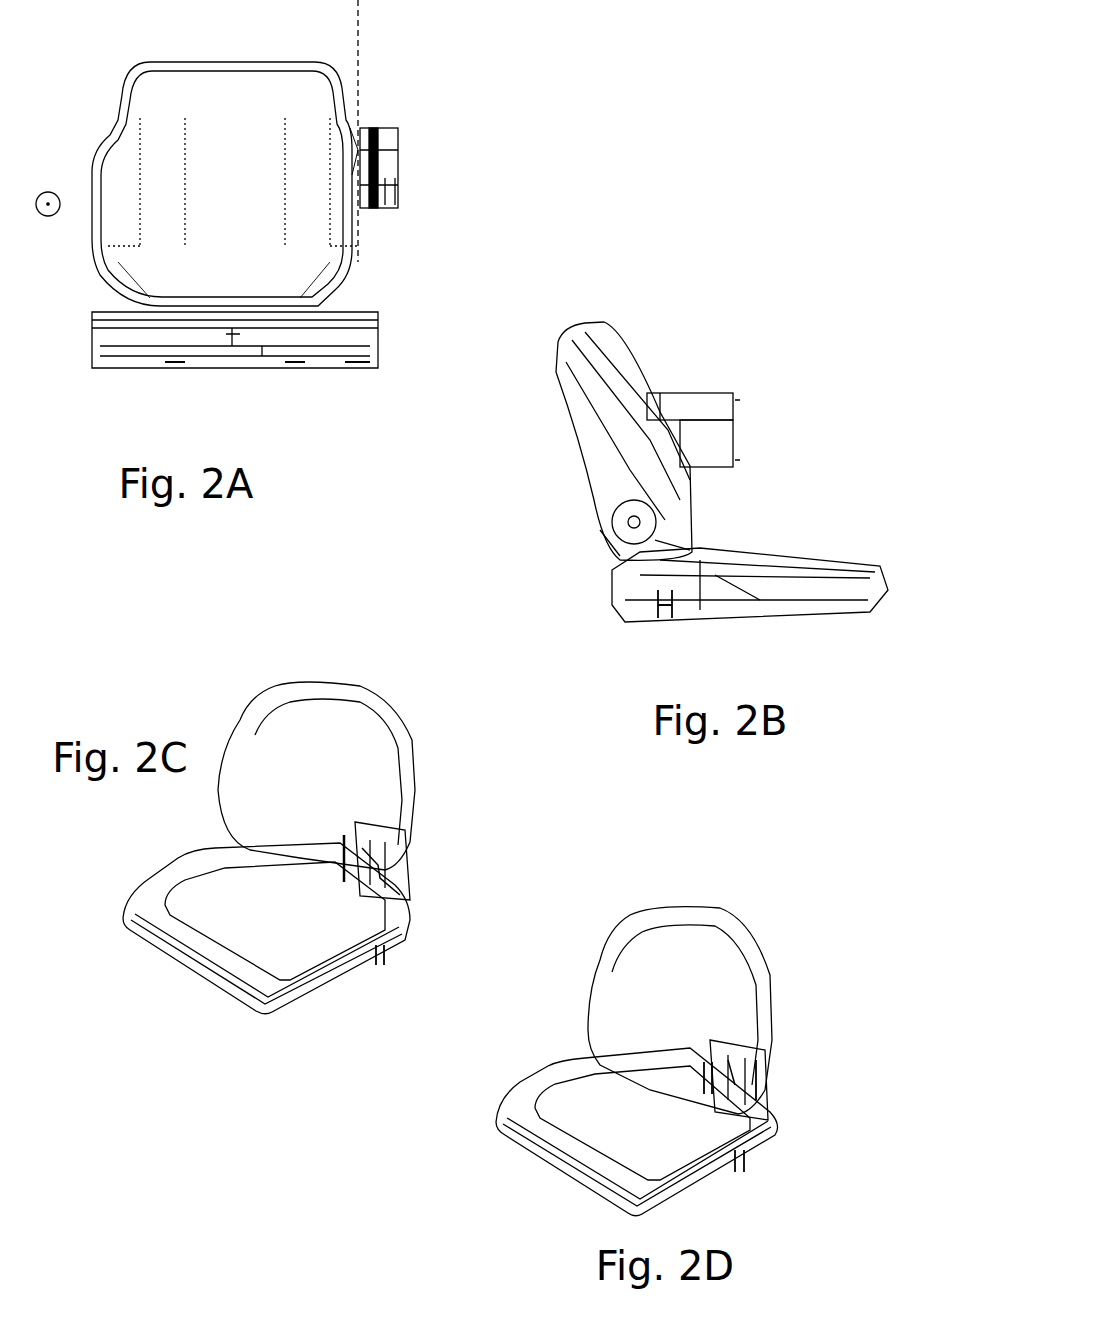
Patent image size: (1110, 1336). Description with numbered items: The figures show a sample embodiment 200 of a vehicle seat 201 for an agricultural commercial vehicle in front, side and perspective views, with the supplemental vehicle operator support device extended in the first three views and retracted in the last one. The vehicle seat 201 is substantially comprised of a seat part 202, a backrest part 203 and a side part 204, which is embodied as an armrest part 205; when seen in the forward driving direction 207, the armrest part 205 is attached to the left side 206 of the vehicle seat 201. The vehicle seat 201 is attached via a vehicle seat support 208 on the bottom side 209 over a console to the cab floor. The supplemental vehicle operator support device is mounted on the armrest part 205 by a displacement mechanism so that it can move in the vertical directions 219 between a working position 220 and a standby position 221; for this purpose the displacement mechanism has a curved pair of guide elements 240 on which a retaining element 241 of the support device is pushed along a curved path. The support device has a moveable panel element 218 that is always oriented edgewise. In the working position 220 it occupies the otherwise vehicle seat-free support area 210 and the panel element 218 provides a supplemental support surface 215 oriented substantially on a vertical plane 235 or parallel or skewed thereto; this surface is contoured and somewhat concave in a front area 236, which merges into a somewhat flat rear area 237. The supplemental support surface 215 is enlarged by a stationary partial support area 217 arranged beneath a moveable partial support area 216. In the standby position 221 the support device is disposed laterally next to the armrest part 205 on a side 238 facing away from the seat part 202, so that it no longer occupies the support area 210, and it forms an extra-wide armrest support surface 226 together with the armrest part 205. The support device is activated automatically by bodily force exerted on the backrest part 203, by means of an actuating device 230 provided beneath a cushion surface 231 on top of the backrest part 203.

In FIG. 2A, the sample embodiment 200 is at (658, 125).
In FIG. 2A, the vehicle seat 201 is at (325, 396).
In FIG. 2B, the vehicle seat 201 is at (584, 624).
In FIG. 2C, the vehicle seat 201 is at (180, 1004).
In FIG. 2D, the vehicle seat 201 is at (518, 1186).
In FIG. 2A, the seat part 202 is at (128, 345).
In FIG. 2B, the seat part 202 is at (746, 588).
In FIG. 2C, the seat part 202 is at (172, 884).
In FIG. 2D, the seat part 202 is at (548, 1096).
In FIG. 2A, the backrest part 203 is at (214, 208).
In FIG. 2B, the backrest part 203 is at (608, 428).
In FIG. 2C, the backrest part 203 is at (287, 753).
In FIG. 2D, the backrest part 203 is at (652, 991).
In FIG. 2A, the side part 204 is at (395, 222).
In FIG. 2B, the side part 204 is at (740, 474).
In FIG. 2A, the armrest part 205 is at (362, 188).
In FIG. 2B, the armrest part 205 is at (735, 450).
In FIG. 2C, the armrest part 205 is at (346, 858).
In FIG. 2D, the armrest part 205 is at (702, 1075).
In FIG. 2A, the left side 206 is at (582, 208).
In FIG. 2C, the left side 206 is at (479, 888).
In FIG. 2D, the left side 206 is at (859, 1068).
In FIG. 2A, the forward driving direction 207 is at (50, 192).
In FIG. 2B, the forward driving direction 207 is at (755, 532).
In FIG. 2C, the forward driving direction 207 is at (330, 1153).
In FIG. 2A, the vehicle seat support 208 is at (180, 366).
In FIG. 2B, the vehicle seat support 208 is at (646, 618).
In FIG. 2C, the vehicle seat support 208 is at (356, 960).
In FIG. 2D, the vehicle seat support 208 is at (714, 1170).
In FIG. 2A, the bottom side 209 is at (228, 374).
In FIG. 2B, the bottom side 209 is at (764, 626).
In FIG. 2A, the vehicle seat-free support area 210 is at (392, 135).
In FIG. 2B, the vehicle seat-free support area 210 is at (745, 416).
In FIG. 2C, the vehicle seat-free support area 210 is at (352, 824).
In FIG. 2D, the vehicle seat-free support area 210 is at (740, 1034).
In FIG. 2A, the supplemental support surface 215 is at (356, 140).
In FIG. 2B, the supplemental support surface 215 is at (692, 408).
In FIG. 2A, the moveable partial support area 216 is at (356, 150).
In FIG. 2B, the moveable partial support area 216 is at (720, 418).
In FIG. 2A, the stationary partial support area 217 is at (356, 173).
In FIG. 2B, the stationary partial support area 217 is at (706, 450).
In FIG. 2A, the moveable panel element 218 is at (380, 128).
In FIG. 2B, the moveable panel element 218 is at (705, 393).
In FIG. 2C, the moveable panel element 218 is at (396, 830).
In FIG. 2D, the moveable panel element 218 is at (756, 1056).
In FIG. 2A, the vertical directions 219 is at (553, 50).
In FIG. 2B, the vertical directions 219 is at (845, 258).
In FIG. 2A, the working position 220 is at (420, 156).
In FIG. 2B, the working position 220 is at (798, 338).
In FIG. 2C, the working position 220 is at (436, 832).
In FIG. 2D, the standby position 221 is at (800, 1094).
In FIG. 2D, the extra-wide armrest support surface 226 is at (736, 1052).
In FIG. 2A, the actuating device 230 is at (308, 92).
In FIG. 2C, the actuating device 230 is at (370, 748).
In FIG. 2D, the actuating device 230 is at (728, 968).
In FIG. 2A, the cushion surface 231 is at (193, 92).
In FIG. 2C, the cushion surface 231 is at (307, 706).
In FIG. 2D, the cushion surface 231 is at (672, 928).
In FIG. 2A, the vertical plane 235 is at (361, 28).
In FIG. 2B, the front area 236 is at (722, 410).
In FIG. 2C, the front area 236 is at (340, 840).
In FIG. 2B, the rear area 237 is at (668, 405).
In FIG. 2C, the rear area 237 is at (364, 812).
In FIG. 2C, the side 238 is at (372, 847).
In FIG. 2D, the side 238 is at (700, 1080).
In FIG. 2A, the pair of guide elements 240 is at (396, 202).
In FIG. 2C, the pair of guide elements 240 is at (398, 856).
In FIG. 2D, the pair of guide elements 240 is at (760, 1070).
In FIG. 2A, the retaining element 241 is at (395, 150).
In FIG. 2C, the retaining element 241 is at (390, 833).
In FIG. 2D, the retaining element 241 is at (762, 1062).